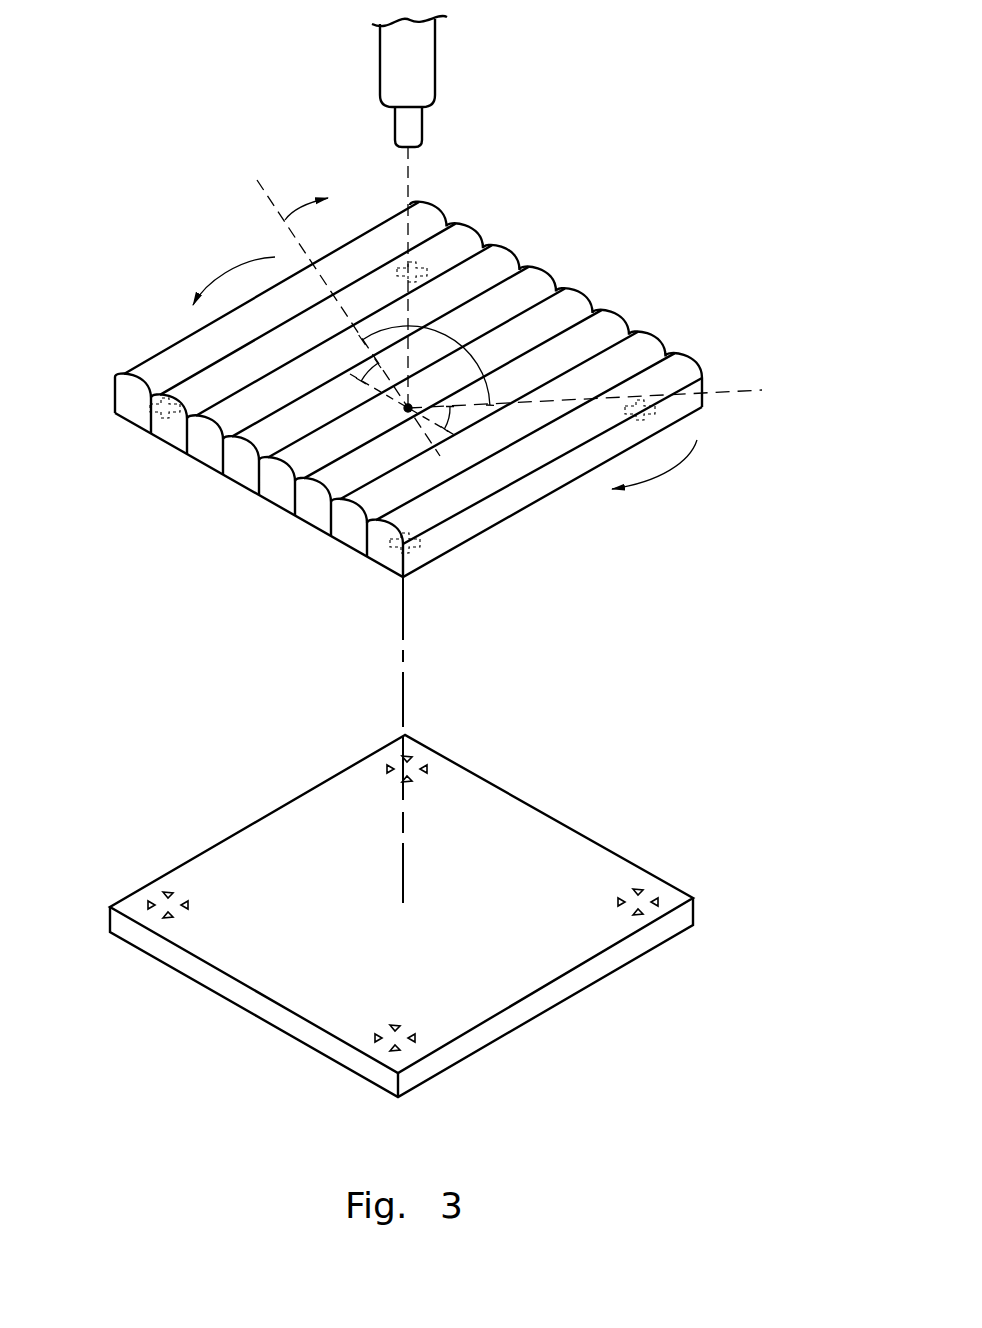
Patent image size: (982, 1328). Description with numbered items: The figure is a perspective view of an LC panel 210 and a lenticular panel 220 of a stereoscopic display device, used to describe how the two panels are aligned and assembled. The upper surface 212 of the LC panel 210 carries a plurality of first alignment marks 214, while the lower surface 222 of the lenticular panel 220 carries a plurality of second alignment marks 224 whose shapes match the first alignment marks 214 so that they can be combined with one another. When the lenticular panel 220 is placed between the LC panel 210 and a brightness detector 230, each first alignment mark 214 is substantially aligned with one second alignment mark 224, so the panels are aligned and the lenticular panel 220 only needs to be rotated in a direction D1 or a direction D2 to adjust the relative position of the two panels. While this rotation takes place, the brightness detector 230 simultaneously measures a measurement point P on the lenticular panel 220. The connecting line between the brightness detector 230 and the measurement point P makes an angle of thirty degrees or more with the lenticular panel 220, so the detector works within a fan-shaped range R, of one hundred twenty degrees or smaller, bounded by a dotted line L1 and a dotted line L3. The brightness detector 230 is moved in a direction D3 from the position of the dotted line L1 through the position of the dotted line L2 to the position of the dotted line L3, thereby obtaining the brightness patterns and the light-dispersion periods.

The brightness detector 230 is at (413, 123).
The lenticular panel 220 is at (437, 515).
The lower surface of the lenticular panel 222 is at (327, 540).
The second alignment marks 224 is at (412, 551).
The LC panel 210 is at (530, 967).
The upper surface of the LC panel 212 is at (502, 866).
The first alignment marks 214 is at (415, 1041).
The measurement point P is at (405, 409).
The dotted line L1 is at (347, 301).
The dotted line L2 is at (410, 180).
The dotted line L3 is at (604, 393).
The fan-shaped range R is at (462, 333).
The direction D1 is at (231, 271).
The direction D2 is at (661, 472).
The direction D3 is at (305, 196).